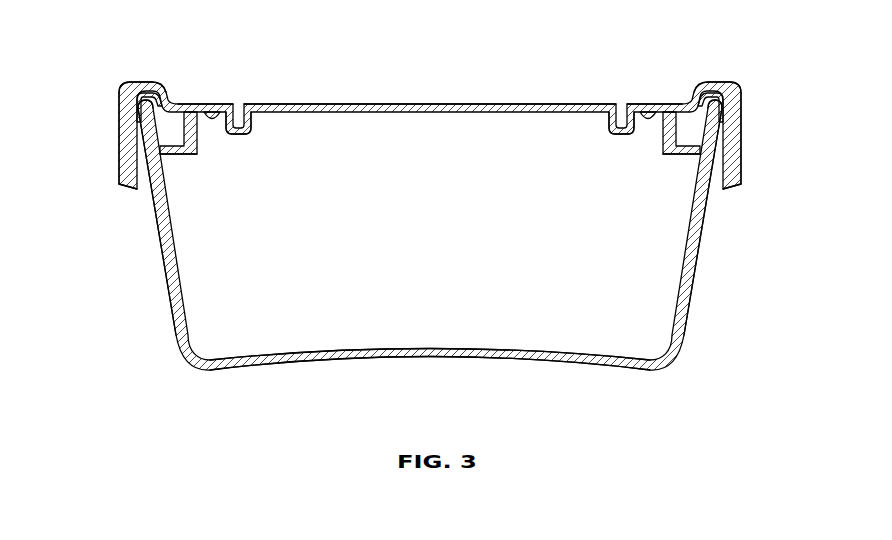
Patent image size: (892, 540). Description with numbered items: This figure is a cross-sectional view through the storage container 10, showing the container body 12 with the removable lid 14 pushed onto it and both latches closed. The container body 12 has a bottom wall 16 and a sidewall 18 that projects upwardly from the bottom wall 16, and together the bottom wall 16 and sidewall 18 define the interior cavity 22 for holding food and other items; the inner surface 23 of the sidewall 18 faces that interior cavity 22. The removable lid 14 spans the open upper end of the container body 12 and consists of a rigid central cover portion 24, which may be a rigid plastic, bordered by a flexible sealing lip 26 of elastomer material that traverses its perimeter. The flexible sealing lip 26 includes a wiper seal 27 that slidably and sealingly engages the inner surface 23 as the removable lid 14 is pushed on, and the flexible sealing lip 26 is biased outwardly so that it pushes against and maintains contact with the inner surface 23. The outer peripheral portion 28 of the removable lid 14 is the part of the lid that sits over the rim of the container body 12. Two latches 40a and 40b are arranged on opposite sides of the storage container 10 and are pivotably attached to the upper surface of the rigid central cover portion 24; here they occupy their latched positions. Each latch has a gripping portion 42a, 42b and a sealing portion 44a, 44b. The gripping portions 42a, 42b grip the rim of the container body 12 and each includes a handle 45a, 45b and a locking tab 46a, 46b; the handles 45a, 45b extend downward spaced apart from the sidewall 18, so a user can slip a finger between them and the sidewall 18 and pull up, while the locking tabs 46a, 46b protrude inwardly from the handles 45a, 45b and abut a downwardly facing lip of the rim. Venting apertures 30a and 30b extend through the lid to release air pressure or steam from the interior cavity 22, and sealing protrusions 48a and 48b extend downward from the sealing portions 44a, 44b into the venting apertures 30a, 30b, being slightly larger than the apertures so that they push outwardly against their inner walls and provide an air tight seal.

The storage container 10 is at (200, 45).
The container body 12 is at (434, 230).
The removable lid 14 is at (428, 142).
The bottom wall 16 is at (486, 362).
The sidewall 18 is at (696, 272).
The interior cavity 22 is at (577, 328).
The inner surface 23 is at (175, 282).
The rigid central cover portion 24 is at (355, 104).
The flexible sealing lip 26 is at (430, 159).
The wiper seal 27 is at (168, 155).
The outer peripheral portion 28 is at (147, 93).
The venting aperture 30a is at (615, 130).
The venting aperture 30b is at (223, 130).
The latch 40a is at (746, 86).
The latch 40b is at (113, 92).
The gripping portion 42a is at (740, 110).
The gripping portion 42b is at (125, 110).
The sealing portion 44a is at (633, 104).
The sealing portion 44b is at (225, 104).
The handle 45a is at (742, 168).
The handle 45b is at (118, 168).
The locking tab 46a is at (714, 176).
The locking tab 46b is at (146, 176).
The sealing protrusion 48a is at (650, 120).
The sealing protrusion 48b is at (210, 120).